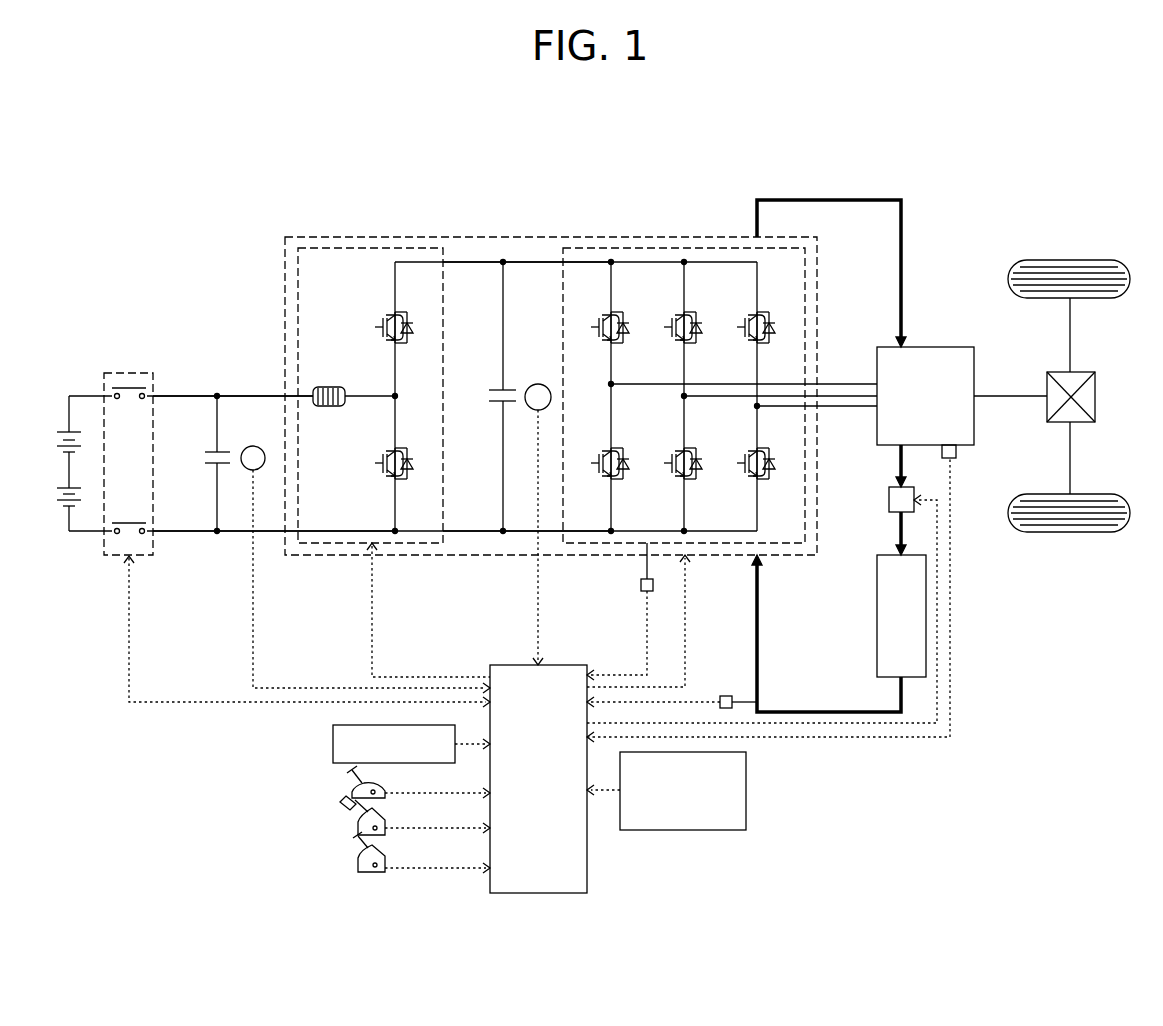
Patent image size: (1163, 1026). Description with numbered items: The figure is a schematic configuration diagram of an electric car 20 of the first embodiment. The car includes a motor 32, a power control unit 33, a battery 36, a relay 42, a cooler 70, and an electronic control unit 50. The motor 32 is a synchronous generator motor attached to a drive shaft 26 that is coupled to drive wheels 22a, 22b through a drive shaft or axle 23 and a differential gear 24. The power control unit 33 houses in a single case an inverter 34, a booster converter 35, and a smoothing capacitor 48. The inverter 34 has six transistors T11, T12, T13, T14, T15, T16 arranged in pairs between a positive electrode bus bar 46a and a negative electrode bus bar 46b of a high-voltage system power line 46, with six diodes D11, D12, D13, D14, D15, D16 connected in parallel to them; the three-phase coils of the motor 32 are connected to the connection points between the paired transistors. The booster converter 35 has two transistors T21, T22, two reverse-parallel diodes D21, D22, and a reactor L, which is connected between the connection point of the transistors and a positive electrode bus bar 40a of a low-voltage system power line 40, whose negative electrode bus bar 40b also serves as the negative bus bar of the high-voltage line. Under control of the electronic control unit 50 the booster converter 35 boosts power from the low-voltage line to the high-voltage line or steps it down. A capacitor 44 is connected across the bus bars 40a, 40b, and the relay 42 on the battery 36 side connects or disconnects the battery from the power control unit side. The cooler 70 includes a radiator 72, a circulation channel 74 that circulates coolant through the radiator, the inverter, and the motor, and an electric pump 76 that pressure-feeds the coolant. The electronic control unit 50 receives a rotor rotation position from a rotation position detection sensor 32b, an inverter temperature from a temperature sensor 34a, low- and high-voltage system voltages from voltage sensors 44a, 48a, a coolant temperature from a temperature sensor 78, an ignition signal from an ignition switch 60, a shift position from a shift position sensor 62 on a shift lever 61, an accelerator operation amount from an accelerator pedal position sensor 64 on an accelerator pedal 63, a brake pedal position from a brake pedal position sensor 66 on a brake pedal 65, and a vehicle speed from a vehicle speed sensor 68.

The electric car 20 is at (948, 178).
The drive wheel 22a is at (1068, 258).
The drive wheel 22b is at (1068, 534).
The drive shaft (axle) 23 is at (1072, 352).
The differential gear 24 is at (1097, 388).
The drive shaft 26 is at (1012, 394).
The motor 32 is at (935, 346).
The rotation position detection sensor 32b is at (958, 452).
The power control unit (PCU) 33 is at (591, 236).
The inverter 34 is at (661, 248).
The temperature sensor 34a is at (640, 585).
The booster converter 35 is at (372, 237).
The battery 36 is at (62, 428).
The low-voltage system power line 40 is at (240, 287).
The positive electrode bus bar 40a is at (163, 396).
The negative electrode bus bar 40b is at (182, 530).
The relay 42 is at (130, 372).
The capacitor 44 is at (223, 449).
The voltage sensor 44a is at (364, 555).
The high-voltage system power line 46 is at (522, 180).
The positive electrode bus bar 46a is at (452, 260).
The negative electrode bus bar 46b is at (463, 530).
The smoothing capacitor 48 is at (497, 404).
The voltage sensor 48a is at (538, 383).
The electronic control unit (ECU) 50 is at (568, 664).
The ignition switch 60 is at (333, 744).
The shift lever 61 is at (350, 778).
The shift position sensor 62 is at (352, 795).
The accelerator pedal 63 is at (345, 810).
The accelerator pedal position sensor 64 is at (358, 832).
The brake pedal 65 is at (355, 842).
The brake pedal position sensor 66 is at (358, 868).
The vehicle speed sensor 68 is at (747, 790).
The cooler 70 is at (866, 184).
The radiator 72 is at (876, 608).
The circulation channel 74 is at (830, 710).
The electric pump 76 is at (888, 500).
The temperature sensor 78 is at (727, 695).
The reactor L is at (325, 385).
The transistor T11 is at (600, 326).
The transistor T12 is at (673, 326).
The transistor T13 is at (746, 326).
The transistor T14 is at (600, 462).
The transistor T15 is at (673, 462).
The transistor T16 is at (746, 462).
The transistor T21 is at (384, 326).
The transistor T22 is at (384, 462).
The diode D11 is at (625, 343).
The diode D12 is at (698, 343).
The diode D13 is at (771, 343).
The diode D14 is at (625, 479).
The diode D15 is at (698, 479).
The diode D16 is at (771, 479).
The diode D21 is at (409, 343).
The diode D22 is at (409, 479).